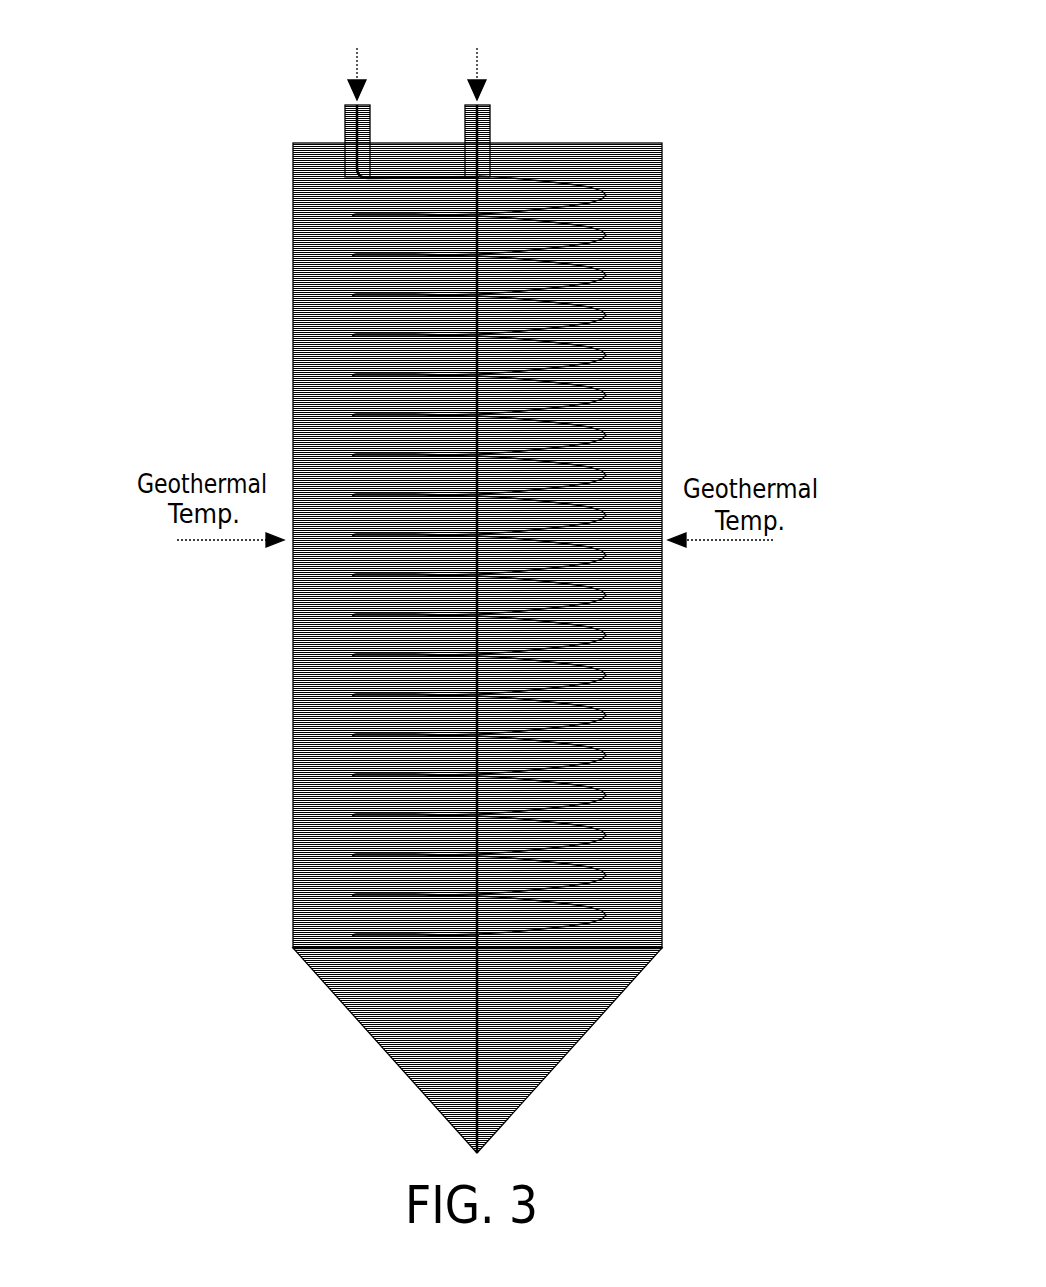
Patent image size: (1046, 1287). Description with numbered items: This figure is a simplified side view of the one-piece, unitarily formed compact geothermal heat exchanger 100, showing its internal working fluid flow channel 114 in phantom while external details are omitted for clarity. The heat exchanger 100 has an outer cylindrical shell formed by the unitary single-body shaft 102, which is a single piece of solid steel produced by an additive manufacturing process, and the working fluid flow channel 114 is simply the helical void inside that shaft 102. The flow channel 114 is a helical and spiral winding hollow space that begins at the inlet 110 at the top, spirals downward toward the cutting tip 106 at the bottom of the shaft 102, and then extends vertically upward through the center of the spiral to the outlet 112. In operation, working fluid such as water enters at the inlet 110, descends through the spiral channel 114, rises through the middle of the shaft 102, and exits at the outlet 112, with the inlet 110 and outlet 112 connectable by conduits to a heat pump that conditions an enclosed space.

The heat exchanger 100 is at (436, 583).
The single-body shaft 102 is at (647, 385).
The cutting tip 106 is at (605, 1057).
The inlet 110 is at (348, 118).
The outlet 112 is at (487, 127).
The working fluid flow channel 114 is at (568, 160).